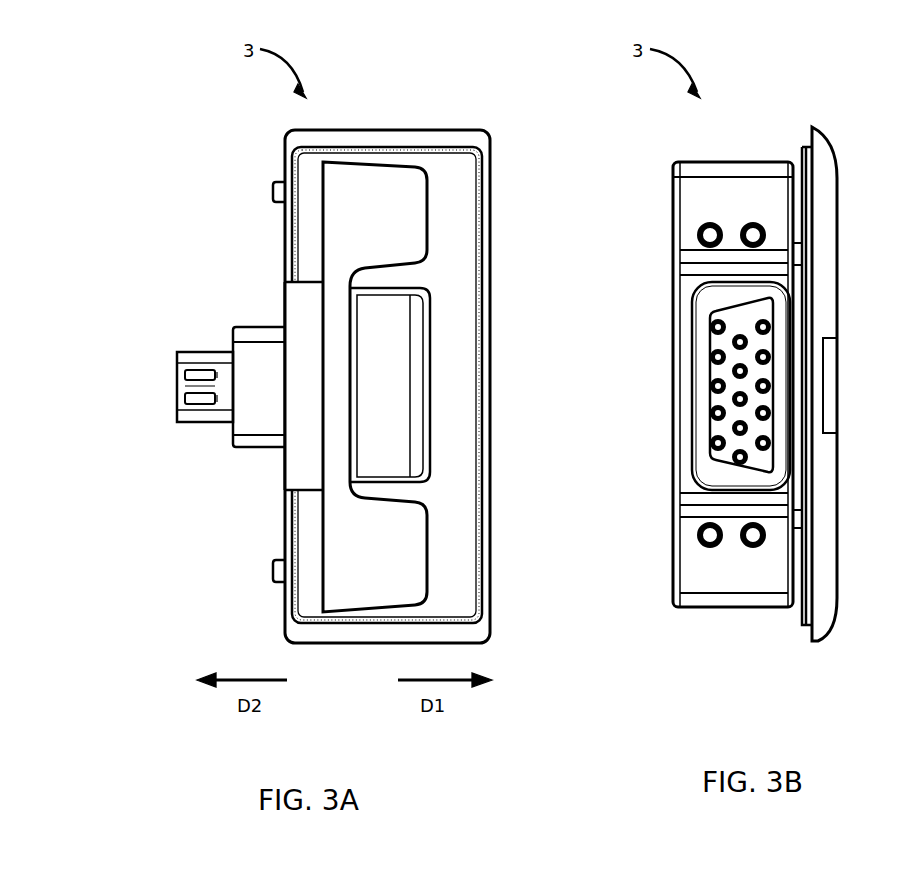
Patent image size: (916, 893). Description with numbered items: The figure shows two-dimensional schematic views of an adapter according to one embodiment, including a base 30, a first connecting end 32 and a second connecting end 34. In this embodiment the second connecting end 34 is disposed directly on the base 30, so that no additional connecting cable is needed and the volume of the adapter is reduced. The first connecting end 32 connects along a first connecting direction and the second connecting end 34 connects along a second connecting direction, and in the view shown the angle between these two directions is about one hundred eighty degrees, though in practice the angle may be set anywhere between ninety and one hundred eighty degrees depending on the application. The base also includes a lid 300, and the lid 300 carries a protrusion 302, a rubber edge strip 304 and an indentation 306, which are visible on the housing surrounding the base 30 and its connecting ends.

In FIG. 3A, the base 30 is at (405, 221).
In FIG. 3B, the base 30 is at (720, 188).
In FIG. 3A, the first connecting end 32 is at (400, 351).
In FIG. 3B, the first connecting end 32 is at (710, 368).
In FIG. 3A, the second connecting end 34 is at (233, 328).
In FIG. 3A, the lid 300 is at (446, 130).
In FIG. 3B, the lid 300 is at (818, 160).
In FIG. 3A, the protrusion 302 is at (273, 189).
In FIG. 3A, the rubber edge strip 304 is at (483, 412).
In FIG. 3B, the rubber edge strip 304 is at (801, 624).
In FIG. 3B, the indentation 306 is at (830, 372).